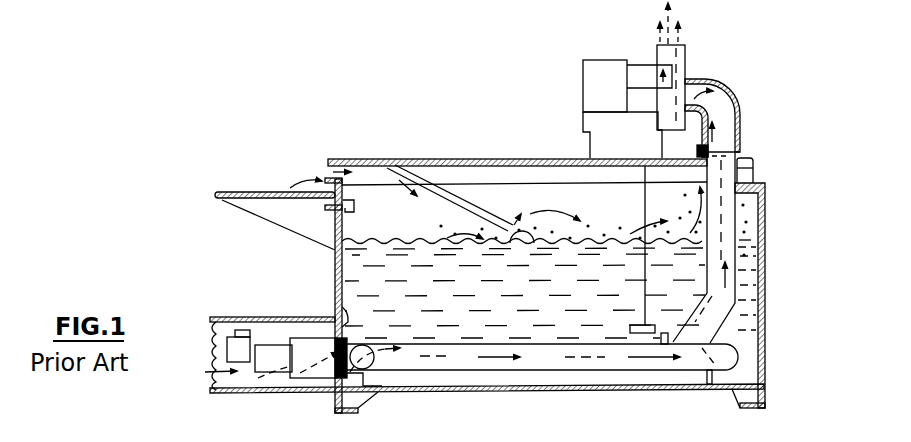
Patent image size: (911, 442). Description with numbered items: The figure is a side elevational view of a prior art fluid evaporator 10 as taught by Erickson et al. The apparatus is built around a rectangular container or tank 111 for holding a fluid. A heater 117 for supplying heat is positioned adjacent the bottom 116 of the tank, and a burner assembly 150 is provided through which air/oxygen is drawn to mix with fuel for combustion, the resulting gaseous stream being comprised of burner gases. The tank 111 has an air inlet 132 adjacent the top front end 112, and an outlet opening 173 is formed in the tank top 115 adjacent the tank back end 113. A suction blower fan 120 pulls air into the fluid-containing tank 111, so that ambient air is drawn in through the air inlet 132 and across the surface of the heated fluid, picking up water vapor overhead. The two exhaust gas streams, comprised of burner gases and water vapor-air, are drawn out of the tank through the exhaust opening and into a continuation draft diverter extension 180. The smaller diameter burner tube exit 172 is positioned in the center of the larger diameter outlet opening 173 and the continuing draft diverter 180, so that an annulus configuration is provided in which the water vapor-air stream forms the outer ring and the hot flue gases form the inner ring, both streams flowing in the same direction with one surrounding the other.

The prior art frying apparatus 10 is at (770, 227).
The tank 111 is at (545, 198).
The top front end 112 is at (336, 268).
The tank back end 113 is at (765, 278).
The tank top 115 is at (570, 158).
The bottom 116 is at (530, 392).
The heater 117 is at (250, 380).
The suction blower fan 120 is at (691, 60).
The air inlet 132 is at (328, 160).
The burner assembly 150 is at (222, 318).
The burner tube exit 172 is at (753, 169).
The outlet opening 173 is at (742, 148).
The draft diverter extension 180 is at (734, 122).